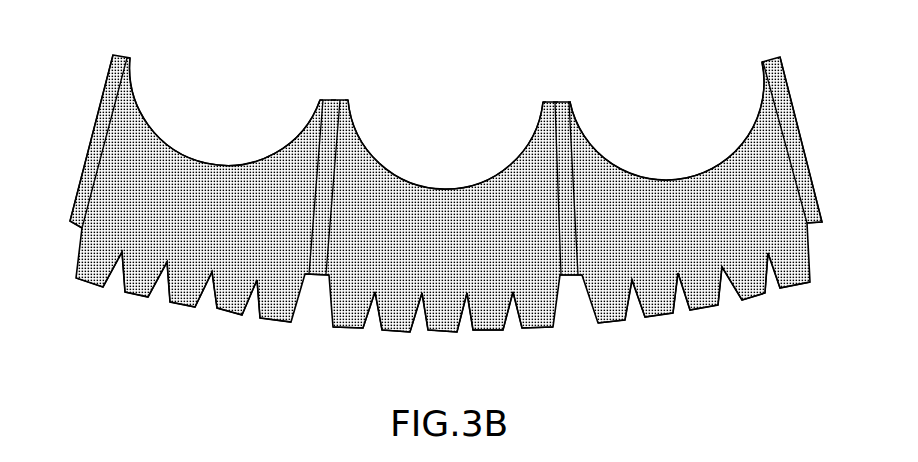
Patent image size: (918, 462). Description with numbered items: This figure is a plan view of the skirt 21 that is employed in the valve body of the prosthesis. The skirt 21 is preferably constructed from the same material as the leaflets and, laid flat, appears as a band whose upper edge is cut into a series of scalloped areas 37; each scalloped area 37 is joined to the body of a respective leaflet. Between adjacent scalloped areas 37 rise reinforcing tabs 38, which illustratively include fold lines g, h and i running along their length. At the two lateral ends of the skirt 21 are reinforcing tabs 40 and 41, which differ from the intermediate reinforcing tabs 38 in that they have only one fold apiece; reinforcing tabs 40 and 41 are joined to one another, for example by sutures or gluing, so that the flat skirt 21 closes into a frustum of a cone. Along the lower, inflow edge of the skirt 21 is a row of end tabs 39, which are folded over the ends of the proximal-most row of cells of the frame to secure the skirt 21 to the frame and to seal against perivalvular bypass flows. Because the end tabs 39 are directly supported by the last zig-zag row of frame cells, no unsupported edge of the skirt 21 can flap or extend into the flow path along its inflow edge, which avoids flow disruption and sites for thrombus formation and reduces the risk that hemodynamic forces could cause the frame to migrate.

The skirt 21 is at (738, 220).
The scalloped areas 37 is at (197, 173).
The reinforcing tabs 38 is at (318, 277).
The end tabs 39 is at (225, 315).
The reinforcing tab 40 is at (97, 117).
The reinforcing tab 41 is at (793, 90).
The fold line g is at (320, 100).
The fold line h is at (332, 100).
The fold line i is at (127, 54).